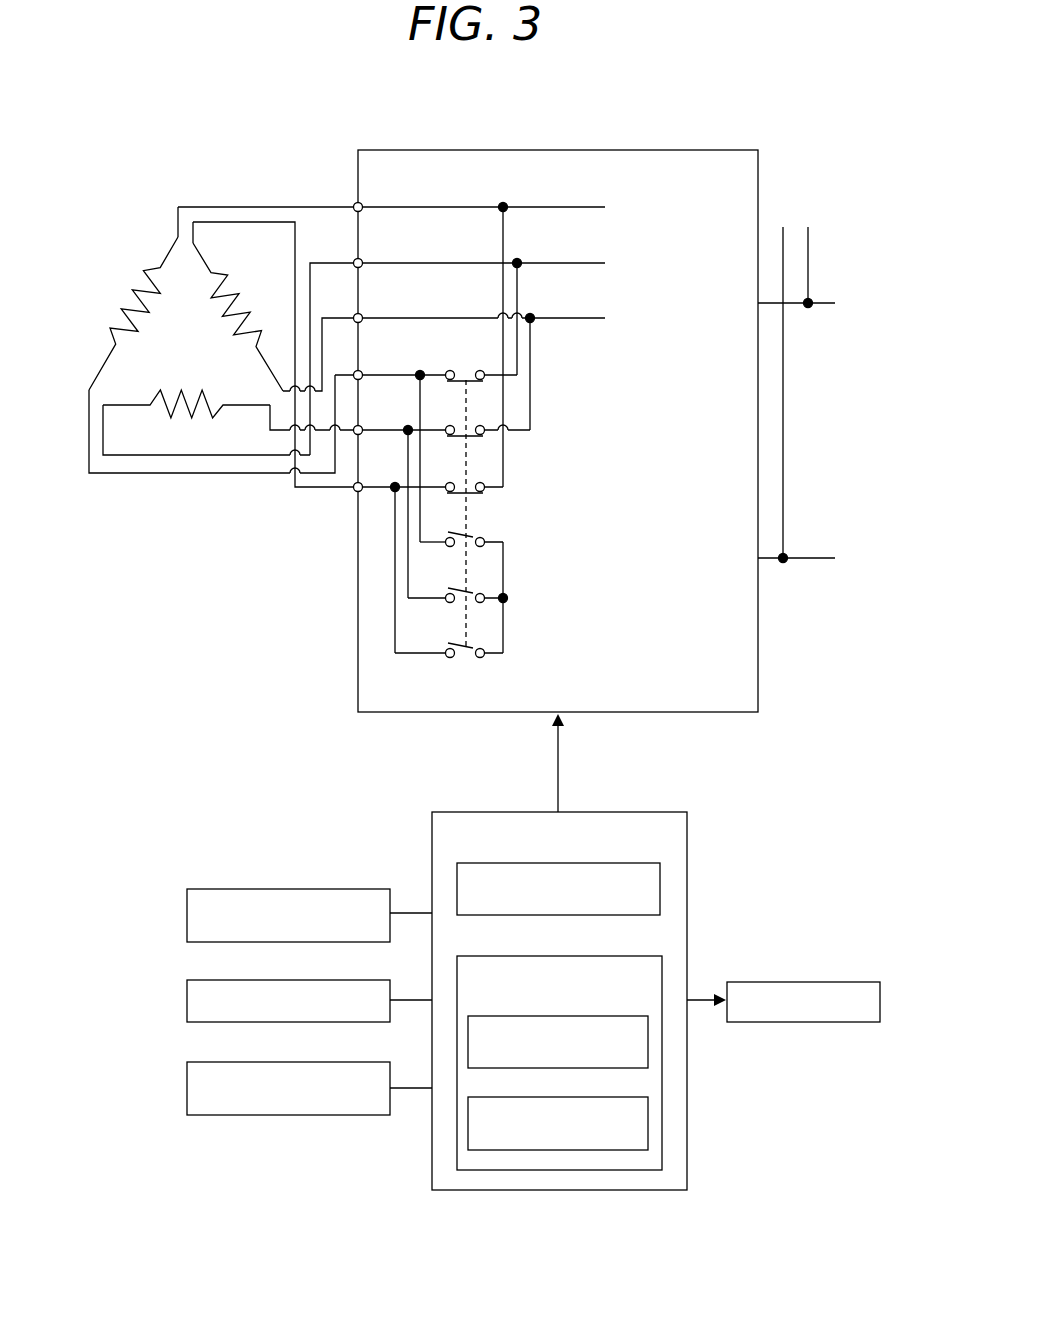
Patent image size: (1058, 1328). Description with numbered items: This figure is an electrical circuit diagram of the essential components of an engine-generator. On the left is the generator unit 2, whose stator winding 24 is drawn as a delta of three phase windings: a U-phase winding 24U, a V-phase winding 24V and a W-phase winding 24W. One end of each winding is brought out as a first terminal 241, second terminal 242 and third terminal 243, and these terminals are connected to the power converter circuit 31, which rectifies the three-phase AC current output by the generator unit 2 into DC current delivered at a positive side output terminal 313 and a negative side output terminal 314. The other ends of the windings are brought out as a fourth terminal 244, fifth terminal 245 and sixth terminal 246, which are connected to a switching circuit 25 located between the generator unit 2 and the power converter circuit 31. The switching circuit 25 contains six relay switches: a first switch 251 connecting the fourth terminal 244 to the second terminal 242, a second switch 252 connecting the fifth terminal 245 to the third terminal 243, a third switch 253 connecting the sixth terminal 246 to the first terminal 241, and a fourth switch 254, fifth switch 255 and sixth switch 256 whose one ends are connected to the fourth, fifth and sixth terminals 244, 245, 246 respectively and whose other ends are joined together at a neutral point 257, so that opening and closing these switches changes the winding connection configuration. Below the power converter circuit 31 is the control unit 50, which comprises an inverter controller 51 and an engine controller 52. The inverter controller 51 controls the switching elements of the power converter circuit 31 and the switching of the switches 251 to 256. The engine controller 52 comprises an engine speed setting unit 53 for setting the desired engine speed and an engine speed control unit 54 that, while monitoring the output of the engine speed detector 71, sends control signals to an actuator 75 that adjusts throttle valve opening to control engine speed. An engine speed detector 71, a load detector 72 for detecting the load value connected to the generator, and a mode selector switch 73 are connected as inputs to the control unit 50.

The generator unit 2 is at (185, 193).
The stator winding 24 is at (152, 234).
The U-phase winding 24U is at (128, 295).
The V-phase winding 24V is at (176, 416).
The W-phase winding 24W is at (248, 303).
The switching circuit 25 is at (583, 468).
The power converter circuit 31 is at (722, 150).
The first terminal 241 is at (360, 203).
The second terminal 242 is at (360, 259).
The third terminal 243 is at (360, 314).
The fourth terminal 244 is at (360, 371).
The fifth terminal 245 is at (360, 426).
The sixth terminal 246 is at (355, 492).
The first switch 251 is at (461, 377).
The second switch 252 is at (455, 432).
The third switch 253 is at (455, 489).
The fourth switch 254 is at (472, 534).
The fifth switch 255 is at (472, 590).
The sixth switch 256 is at (472, 645).
The neutral point 257 is at (508, 598).
The positive side output terminal 313 is at (810, 306).
The negative side output terminal 314 is at (785, 561).
The control unit 50 is at (640, 1190).
The inverter controller 51 is at (662, 885).
The engine controller 52 is at (662, 965).
The engine speed setting unit 53 is at (648, 1035).
The engine speed control unit 54 is at (648, 1108).
The engine speed detector 71 is at (187, 910).
The load detector 72 is at (187, 995).
The mode selector switch 73 is at (187, 1082).
The actuator 75 is at (838, 982).